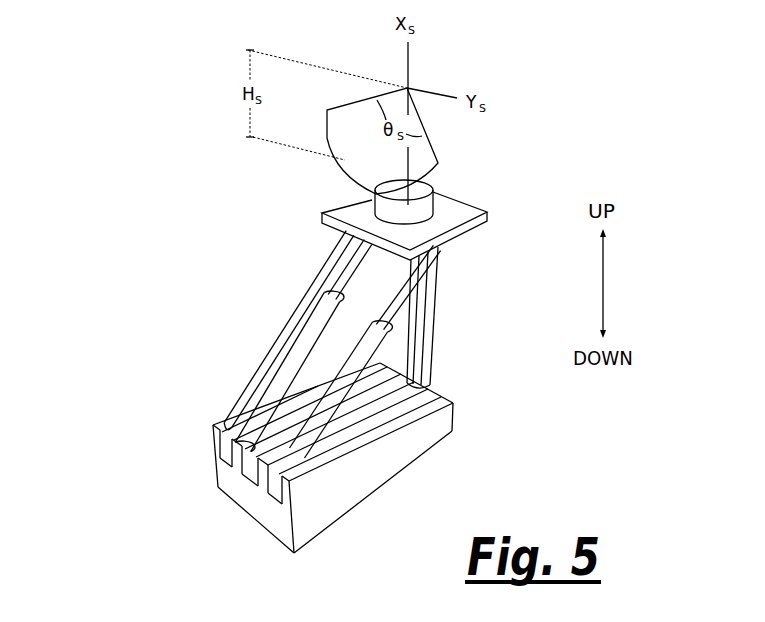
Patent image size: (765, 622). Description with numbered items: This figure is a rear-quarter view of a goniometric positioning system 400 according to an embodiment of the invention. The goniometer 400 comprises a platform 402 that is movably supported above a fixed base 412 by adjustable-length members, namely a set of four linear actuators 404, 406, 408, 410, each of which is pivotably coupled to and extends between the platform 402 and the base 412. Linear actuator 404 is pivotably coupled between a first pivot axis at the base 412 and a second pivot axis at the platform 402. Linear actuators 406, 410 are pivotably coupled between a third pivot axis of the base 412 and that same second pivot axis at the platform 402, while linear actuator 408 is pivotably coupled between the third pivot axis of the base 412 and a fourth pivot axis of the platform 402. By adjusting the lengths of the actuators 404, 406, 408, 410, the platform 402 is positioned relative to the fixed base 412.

The goniometric positioning system 400 is at (169, 221).
The platform 402 is at (437, 190).
The linear actuator 404 is at (433, 320).
The linear actuator 406 is at (247, 391).
The linear actuator 408 is at (333, 293).
The linear actuator 410 is at (360, 341).
The fixed base 412 is at (417, 452).